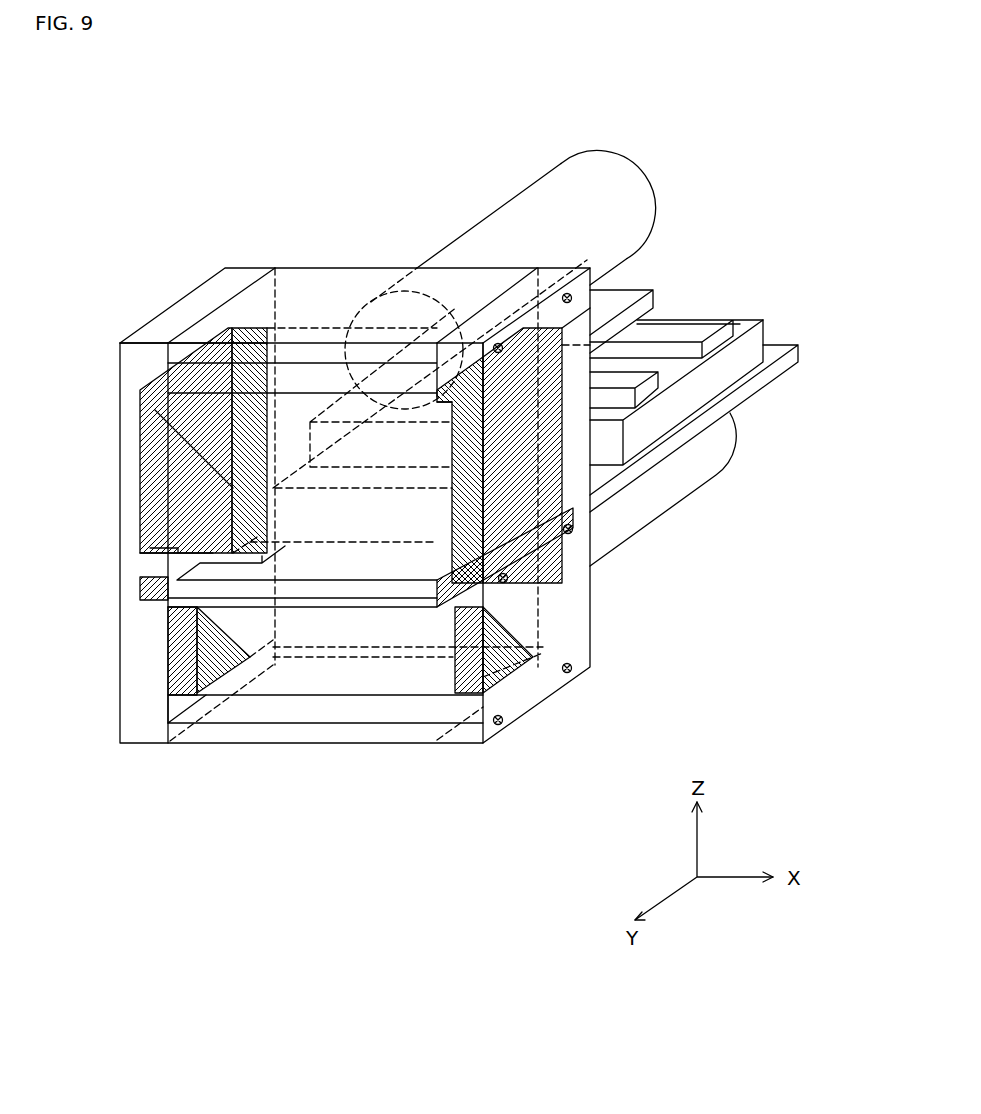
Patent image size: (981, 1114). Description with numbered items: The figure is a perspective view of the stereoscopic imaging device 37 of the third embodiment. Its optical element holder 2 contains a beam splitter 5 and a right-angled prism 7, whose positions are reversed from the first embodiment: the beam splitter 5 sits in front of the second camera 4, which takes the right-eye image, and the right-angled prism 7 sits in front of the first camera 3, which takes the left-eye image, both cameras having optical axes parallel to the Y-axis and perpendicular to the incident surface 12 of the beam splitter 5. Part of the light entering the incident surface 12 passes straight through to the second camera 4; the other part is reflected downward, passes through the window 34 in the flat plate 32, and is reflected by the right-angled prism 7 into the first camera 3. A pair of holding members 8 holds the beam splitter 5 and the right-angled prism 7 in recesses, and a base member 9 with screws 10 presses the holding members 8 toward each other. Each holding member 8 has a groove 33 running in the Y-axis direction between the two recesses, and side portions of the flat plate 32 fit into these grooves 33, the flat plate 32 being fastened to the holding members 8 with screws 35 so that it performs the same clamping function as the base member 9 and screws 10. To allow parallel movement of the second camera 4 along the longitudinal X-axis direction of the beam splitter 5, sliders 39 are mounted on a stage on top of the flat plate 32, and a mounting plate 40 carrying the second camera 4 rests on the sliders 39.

The optical element holder 2 is at (590, 637).
The first camera 3 is at (655, 512).
The second camera 4 is at (652, 213).
The beam splitter 5 is at (176, 454).
The right-angled prism 7 is at (290, 700).
The holding members 8 is at (228, 287).
The base member 9 is at (298, 280).
The screws 10 is at (494, 343).
The incident surface 12 is at (175, 487).
The flat plate 32 is at (795, 345).
The groove 33 is at (140, 597).
The window 34 is at (163, 566).
The screws 35 is at (572, 532).
The stereoscopic imaging device 37 is at (750, 190).
The sliders 39 is at (637, 382).
The mounting plate 40 is at (645, 293).